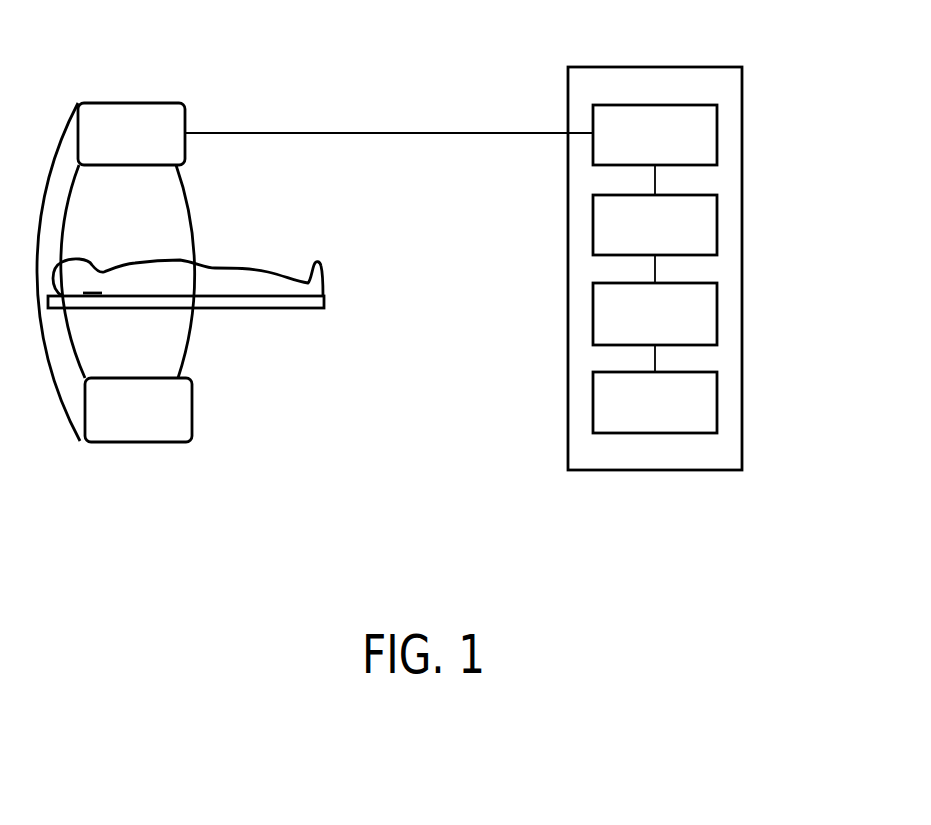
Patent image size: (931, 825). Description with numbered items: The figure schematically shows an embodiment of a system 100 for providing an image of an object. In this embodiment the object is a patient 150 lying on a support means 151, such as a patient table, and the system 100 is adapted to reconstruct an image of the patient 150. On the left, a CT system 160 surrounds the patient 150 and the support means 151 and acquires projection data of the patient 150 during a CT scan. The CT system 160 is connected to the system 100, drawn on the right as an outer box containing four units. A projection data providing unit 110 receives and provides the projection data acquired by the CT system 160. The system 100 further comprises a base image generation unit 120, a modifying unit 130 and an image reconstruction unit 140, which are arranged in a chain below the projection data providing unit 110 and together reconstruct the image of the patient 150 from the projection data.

The system 100 is at (720, 67).
The projection data providing unit 110 is at (717, 135).
The base image generation unit 120 is at (717, 224).
The modifying unit 130 is at (717, 310).
The image reconstruction unit 140 is at (717, 405).
The patient 150 is at (325, 270).
The support means 151 is at (325, 303).
The CT system 160 is at (192, 422).